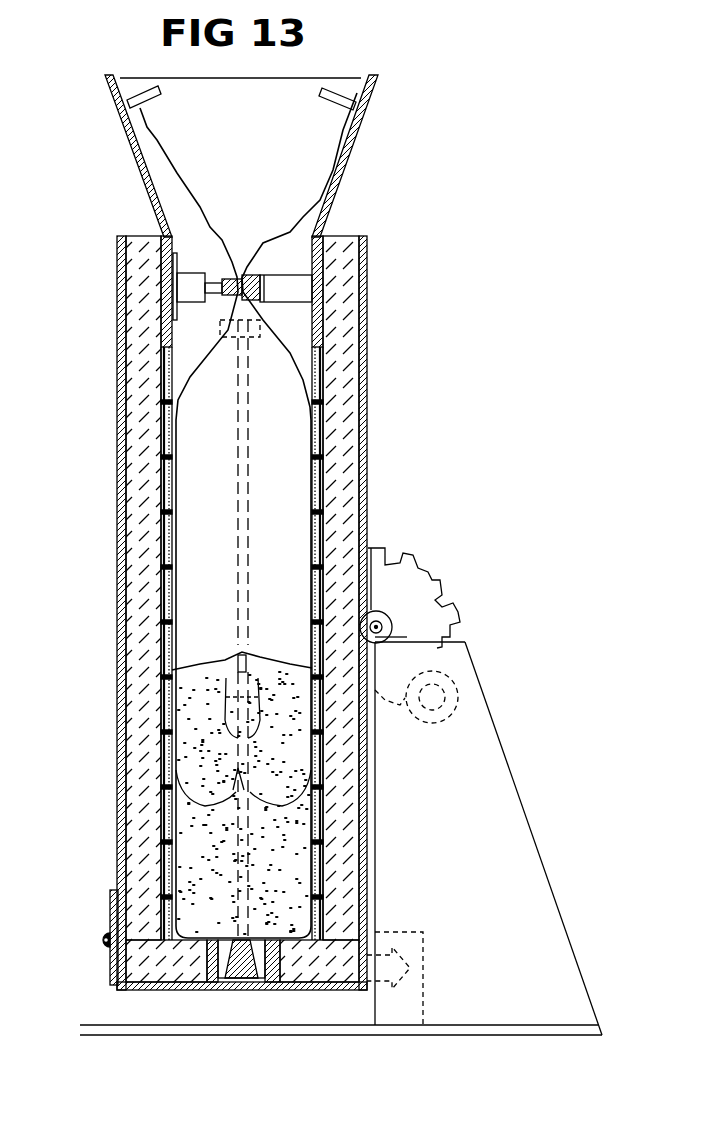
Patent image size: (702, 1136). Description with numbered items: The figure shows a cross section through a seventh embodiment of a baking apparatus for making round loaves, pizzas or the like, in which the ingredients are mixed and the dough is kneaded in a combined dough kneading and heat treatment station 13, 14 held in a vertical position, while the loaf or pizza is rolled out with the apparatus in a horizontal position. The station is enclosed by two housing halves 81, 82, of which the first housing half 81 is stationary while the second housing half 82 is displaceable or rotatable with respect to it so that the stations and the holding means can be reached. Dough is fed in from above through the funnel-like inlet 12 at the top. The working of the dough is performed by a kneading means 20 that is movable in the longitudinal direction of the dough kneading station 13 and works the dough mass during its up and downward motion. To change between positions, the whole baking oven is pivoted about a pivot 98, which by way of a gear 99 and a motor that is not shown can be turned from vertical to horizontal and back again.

The feed funnel 12 is at (328, 77).
The dough kneading station 13 is at (303, 515).
The heat treatment station 14 is at (288, 481).
The kneading means 20 is at (230, 983).
The first housing half 81 is at (141, 312).
The second housing half 82 is at (340, 310).
The pivot 98 is at (380, 624).
The gear 99 is at (455, 613).